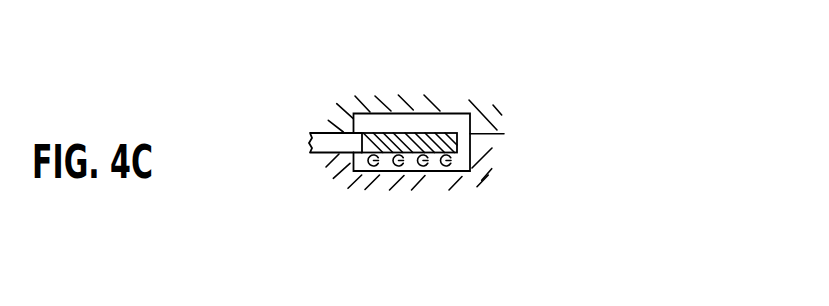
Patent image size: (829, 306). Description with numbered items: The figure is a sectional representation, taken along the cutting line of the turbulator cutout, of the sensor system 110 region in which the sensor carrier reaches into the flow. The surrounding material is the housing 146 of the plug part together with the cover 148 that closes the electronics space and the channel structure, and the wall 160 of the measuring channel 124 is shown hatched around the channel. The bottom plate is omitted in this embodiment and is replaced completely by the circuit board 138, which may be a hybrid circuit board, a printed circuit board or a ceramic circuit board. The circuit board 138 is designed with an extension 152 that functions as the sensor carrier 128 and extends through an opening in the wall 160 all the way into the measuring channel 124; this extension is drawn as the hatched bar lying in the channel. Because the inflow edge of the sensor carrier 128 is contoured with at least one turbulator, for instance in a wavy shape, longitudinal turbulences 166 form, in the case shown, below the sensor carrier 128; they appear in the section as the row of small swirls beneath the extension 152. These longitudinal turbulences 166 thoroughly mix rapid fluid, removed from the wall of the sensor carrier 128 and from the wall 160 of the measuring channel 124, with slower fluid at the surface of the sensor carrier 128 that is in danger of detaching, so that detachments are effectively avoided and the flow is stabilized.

The sensor arrangement 110 is at (348, 83).
The measuring channel 124 is at (443, 120).
The housing 146 is at (395, 113).
The cover 148 is at (435, 173).
The wall of measuring channel 160 is at (415, 142).
The sensor carrier 128 is at (452, 141).
The circuit board 138 is at (409, 143).
The extension 152 is at (409, 143).
The longitudinal turbulences 166 is at (393, 172).